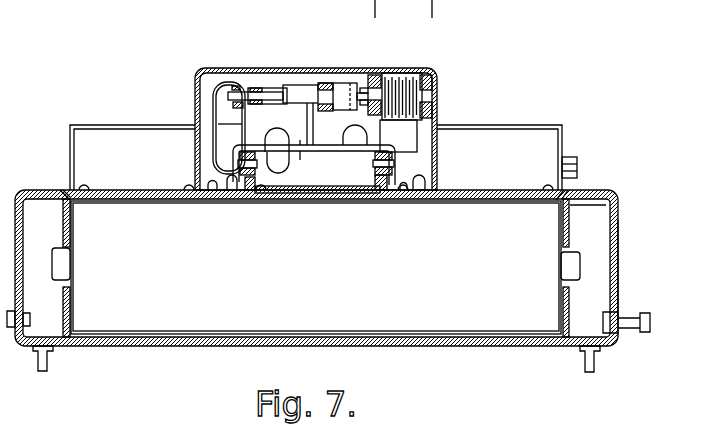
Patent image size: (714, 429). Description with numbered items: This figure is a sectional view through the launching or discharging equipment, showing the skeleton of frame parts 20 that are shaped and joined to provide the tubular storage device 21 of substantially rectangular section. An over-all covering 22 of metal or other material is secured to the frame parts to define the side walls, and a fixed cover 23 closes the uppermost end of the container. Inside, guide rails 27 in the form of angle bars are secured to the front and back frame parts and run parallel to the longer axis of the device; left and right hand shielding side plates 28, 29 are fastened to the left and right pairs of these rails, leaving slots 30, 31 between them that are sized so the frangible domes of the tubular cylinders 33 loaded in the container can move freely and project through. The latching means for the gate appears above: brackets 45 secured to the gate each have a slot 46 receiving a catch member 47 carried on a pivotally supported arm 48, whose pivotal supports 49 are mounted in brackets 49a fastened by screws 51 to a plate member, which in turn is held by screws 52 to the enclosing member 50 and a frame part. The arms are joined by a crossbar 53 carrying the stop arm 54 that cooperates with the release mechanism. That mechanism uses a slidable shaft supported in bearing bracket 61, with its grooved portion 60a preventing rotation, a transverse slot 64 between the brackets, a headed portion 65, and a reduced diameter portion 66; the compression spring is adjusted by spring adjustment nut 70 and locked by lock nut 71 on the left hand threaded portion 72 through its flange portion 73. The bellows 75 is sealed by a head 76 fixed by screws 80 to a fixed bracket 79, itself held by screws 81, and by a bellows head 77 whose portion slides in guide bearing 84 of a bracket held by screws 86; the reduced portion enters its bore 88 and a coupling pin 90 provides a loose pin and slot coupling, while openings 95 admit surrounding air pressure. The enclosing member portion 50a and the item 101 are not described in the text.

The frame parts 20 is at (617, 236).
The storage device 21 is at (593, 215).
The covering 22 is at (620, 259).
The fixed cover 23 is at (605, 222).
The guide rails 27 is at (70, 196).
The left hand shielding side plates 28 is at (63, 224).
The right hand shielding side plates 29 is at (570, 232).
The slot 30 is at (56, 249).
The slot 31 is at (569, 288).
The tubular cylinders 33 is at (483, 334).
The brackets 45 is at (260, 196).
The slot 46 is at (249, 196).
The catch member 47 is at (227, 183).
The pivotally supported arm 48 is at (234, 150).
The pivotal supports 49 is at (272, 164).
The brackets 49a is at (313, 196).
The enclosing member 50 is at (196, 156).
The cover housing 50a is at (547, 131).
The screws 51 is at (266, 180).
The screws 52 is at (208, 197).
The crossbar 53 is at (240, 124).
The stop arm 54 is at (316, 148).
The portion of the shaft 60a is at (325, 83).
The bearing bracket 61 is at (340, 83).
The transverse slot 64 is at (304, 84).
The headed portion 65 is at (350, 83).
The reduced diameter portion 66 is at (361, 93).
The spring adjustment nut 70 is at (248, 91).
The lock nut 71 is at (237, 88).
The left hand threaded portion 72 is at (238, 90).
The flange portion 73 is at (245, 108).
The bellows 75 is at (440, 102).
The head 76 is at (433, 78).
The bellows head 77 is at (374, 90).
The fixed bracket 79 is at (438, 82).
The screws 80 is at (433, 93).
The screws 81 is at (437, 112).
The guide bearing 84 is at (398, 136).
The screws 86 is at (375, 118).
The bore 88 is at (395, 92).
The coupling pin 90 is at (345, 110).
The openings 95 is at (222, 100).
The cable 101 is at (291, 4).